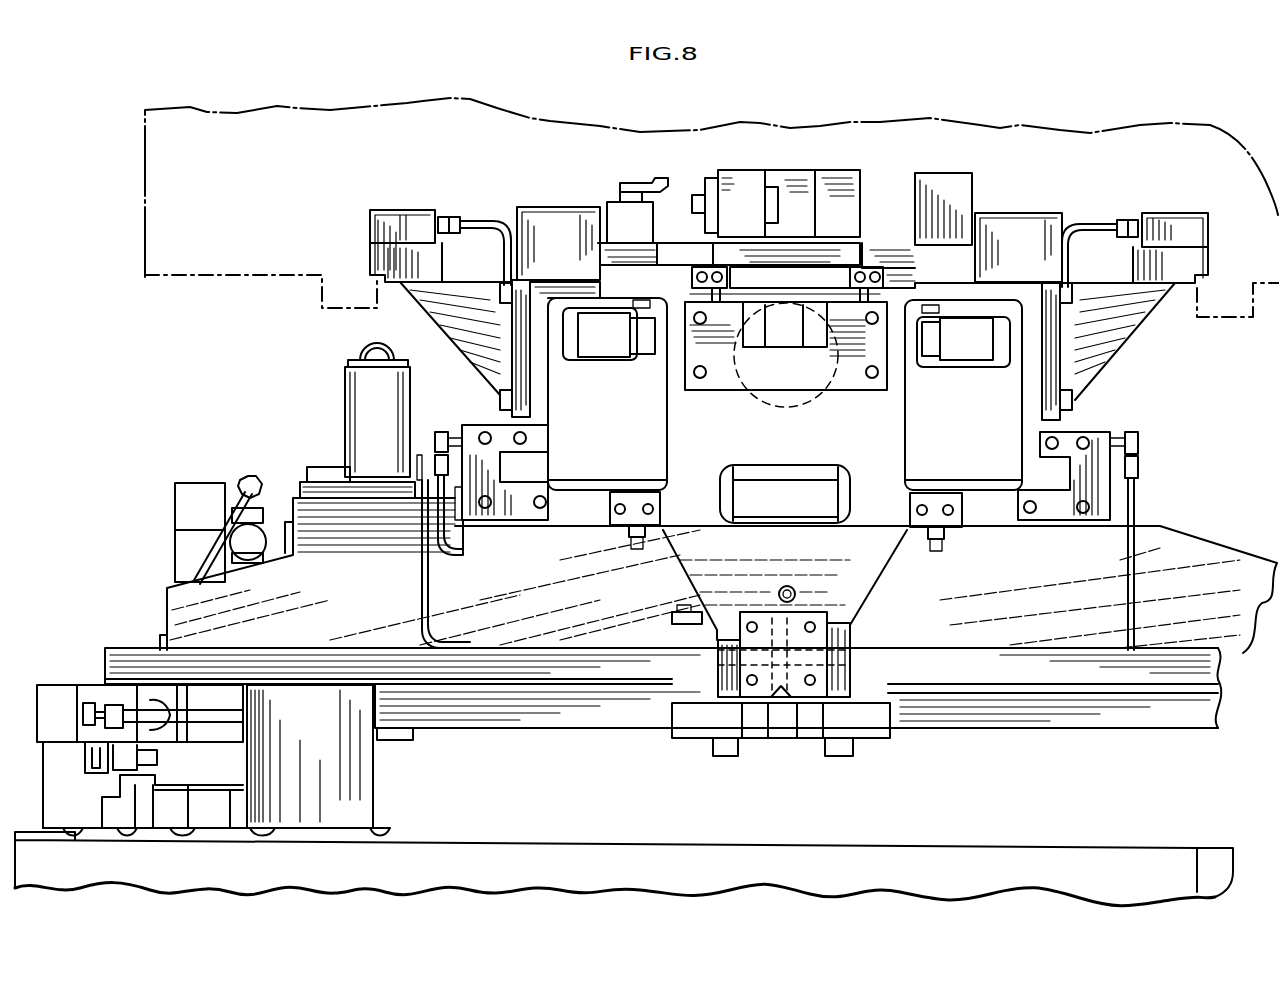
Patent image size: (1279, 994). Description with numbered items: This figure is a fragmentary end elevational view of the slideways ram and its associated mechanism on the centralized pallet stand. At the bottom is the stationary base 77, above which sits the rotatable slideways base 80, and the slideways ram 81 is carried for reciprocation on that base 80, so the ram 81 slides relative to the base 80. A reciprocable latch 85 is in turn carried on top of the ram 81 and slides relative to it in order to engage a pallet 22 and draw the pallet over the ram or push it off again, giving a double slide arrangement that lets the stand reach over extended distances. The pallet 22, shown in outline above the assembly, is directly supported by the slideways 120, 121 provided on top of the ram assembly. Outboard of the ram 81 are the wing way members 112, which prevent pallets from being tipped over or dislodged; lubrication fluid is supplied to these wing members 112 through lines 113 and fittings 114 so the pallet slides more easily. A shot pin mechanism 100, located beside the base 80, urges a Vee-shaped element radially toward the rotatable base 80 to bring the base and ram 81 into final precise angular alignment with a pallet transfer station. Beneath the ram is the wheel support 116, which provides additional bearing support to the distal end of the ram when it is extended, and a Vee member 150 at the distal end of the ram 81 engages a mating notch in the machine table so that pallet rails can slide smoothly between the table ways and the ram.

The pallet 22 is at (280, 159).
The stationary base 77 is at (545, 872).
The rotatable slideways base 80 is at (351, 587).
The slideways ram 81 is at (1102, 370).
The reciprocable latch 85 is at (790, 170).
The shot pin mechanism 100 is at (70, 686).
The wing way member 112 is at (444, 250).
The lubrication line 113 is at (472, 215).
The fitting 114 is at (400, 210).
The wheel support 116 is at (735, 700).
The slideway 120 is at (568, 248).
The slideway 121 is at (1021, 248).
The Vee member 150 is at (787, 335).